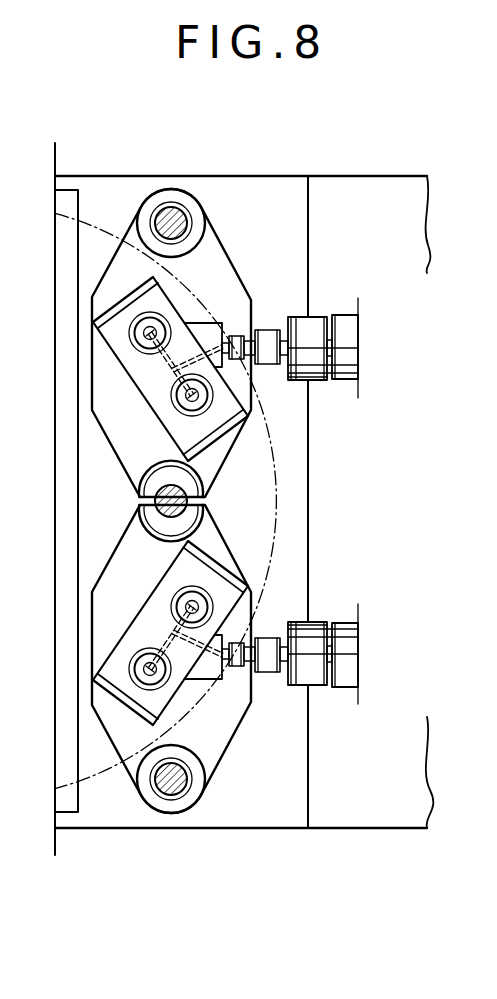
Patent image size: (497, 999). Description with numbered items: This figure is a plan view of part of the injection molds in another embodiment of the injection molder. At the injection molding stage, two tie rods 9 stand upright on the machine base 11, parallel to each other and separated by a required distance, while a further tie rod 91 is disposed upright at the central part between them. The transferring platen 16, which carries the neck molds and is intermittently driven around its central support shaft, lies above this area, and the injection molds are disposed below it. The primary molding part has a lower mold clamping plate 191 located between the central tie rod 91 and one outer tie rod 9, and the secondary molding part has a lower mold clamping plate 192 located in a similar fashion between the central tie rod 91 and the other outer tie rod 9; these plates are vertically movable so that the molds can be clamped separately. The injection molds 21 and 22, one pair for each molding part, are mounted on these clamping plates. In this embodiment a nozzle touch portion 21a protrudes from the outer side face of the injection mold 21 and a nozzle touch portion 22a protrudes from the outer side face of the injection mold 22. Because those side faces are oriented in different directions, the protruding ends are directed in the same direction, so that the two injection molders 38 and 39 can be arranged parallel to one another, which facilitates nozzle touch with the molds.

The tie rods 9 is at (175, 212).
The machine base 11 is at (120, 193).
The transferring platen 16 is at (275, 525).
The injection mold 21 is at (165, 692).
The nozzle touch portion 21a is at (210, 663).
The injection mold 22 is at (160, 303).
The nozzle touch portion 22a is at (205, 332).
The injection molder 38 is at (318, 630).
The injection molder 39 is at (312, 362).
The tie rod 91 is at (188, 479).
The lower mold clamping plate 191 is at (125, 567).
The lower mold clamping plate 192 is at (107, 375).